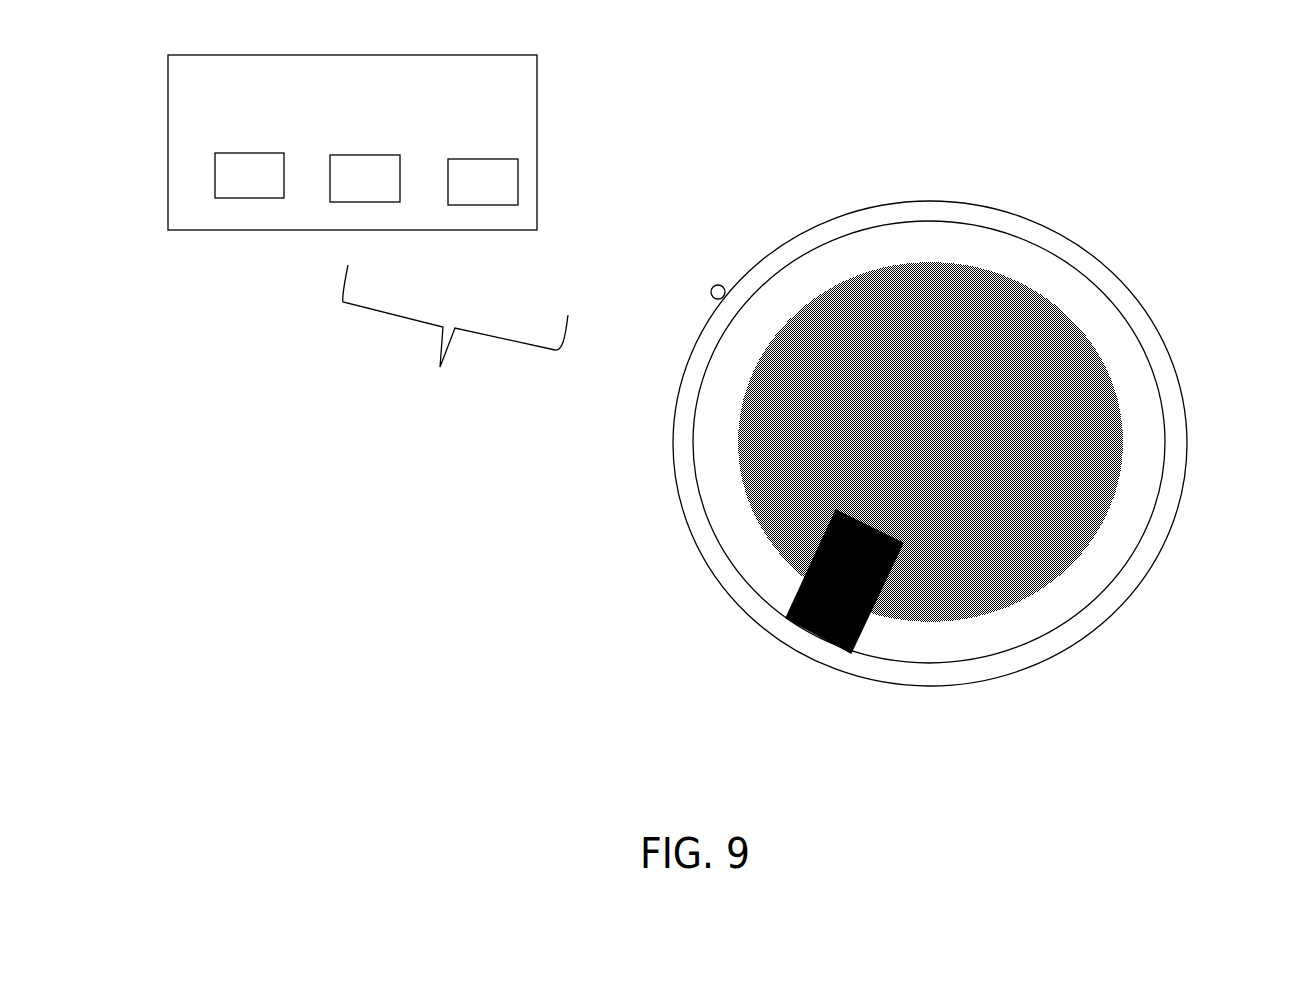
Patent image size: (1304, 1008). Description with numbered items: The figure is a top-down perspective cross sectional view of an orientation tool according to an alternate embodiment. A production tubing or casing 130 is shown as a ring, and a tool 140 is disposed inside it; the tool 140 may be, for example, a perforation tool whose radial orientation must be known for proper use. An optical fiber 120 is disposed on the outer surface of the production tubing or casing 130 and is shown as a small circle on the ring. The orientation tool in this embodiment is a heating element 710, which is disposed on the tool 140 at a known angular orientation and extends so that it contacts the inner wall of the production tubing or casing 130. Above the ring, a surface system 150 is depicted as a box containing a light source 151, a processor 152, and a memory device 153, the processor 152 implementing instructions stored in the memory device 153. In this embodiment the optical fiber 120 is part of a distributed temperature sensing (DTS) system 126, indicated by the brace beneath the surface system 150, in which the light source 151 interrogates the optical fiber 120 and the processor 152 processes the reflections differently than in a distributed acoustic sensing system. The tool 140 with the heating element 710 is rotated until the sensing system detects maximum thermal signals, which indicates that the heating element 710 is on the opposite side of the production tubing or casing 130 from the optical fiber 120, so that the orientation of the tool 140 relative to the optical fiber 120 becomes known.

The optical fiber 120 is at (711, 291).
The distributed temperature sensing (DTS) system 126 is at (455, 347).
The production tubing or casing 130 is at (1160, 535).
The tool 140 is at (845, 464).
The surface system 150 is at (233, 112).
The light source 151 is at (249, 175).
The processor 152 is at (365, 178).
The memory device 153 is at (483, 182).
The heating element 710 is at (865, 632).